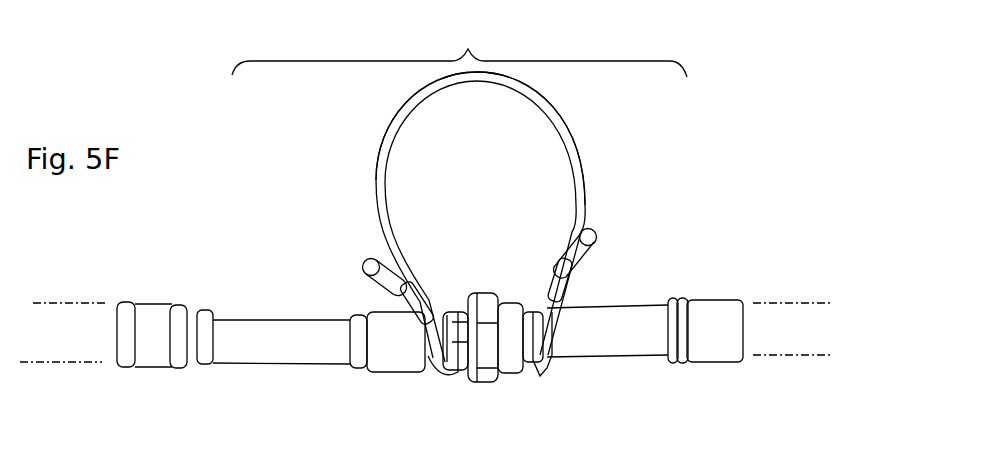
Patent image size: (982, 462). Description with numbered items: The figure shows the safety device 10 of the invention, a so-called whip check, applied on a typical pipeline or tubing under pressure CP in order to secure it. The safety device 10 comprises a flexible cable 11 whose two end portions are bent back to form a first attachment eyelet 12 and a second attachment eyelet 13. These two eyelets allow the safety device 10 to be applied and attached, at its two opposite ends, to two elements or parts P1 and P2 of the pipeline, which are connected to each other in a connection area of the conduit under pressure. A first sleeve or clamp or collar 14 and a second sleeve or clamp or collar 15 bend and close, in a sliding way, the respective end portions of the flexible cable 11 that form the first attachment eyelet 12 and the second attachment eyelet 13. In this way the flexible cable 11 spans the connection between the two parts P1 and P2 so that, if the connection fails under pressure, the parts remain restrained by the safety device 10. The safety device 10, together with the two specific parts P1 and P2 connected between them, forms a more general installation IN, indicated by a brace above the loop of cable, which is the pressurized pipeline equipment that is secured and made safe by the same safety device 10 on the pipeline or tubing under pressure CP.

The safety device 10 is at (599, 159).
The flexible cable 11 is at (382, 147).
The first attachment eyelet 12 is at (440, 364).
The second attachment eyelet 13 is at (542, 372).
The first sleeve or clamp or collar 14 is at (404, 306).
The second sleeve or clamp or collar 15 is at (568, 297).
The installation IN is at (459, 44).
The pipeline or tubing under pressure CP is at (78, 315).
The first part P1 is at (253, 340).
The second part P2 is at (595, 348).